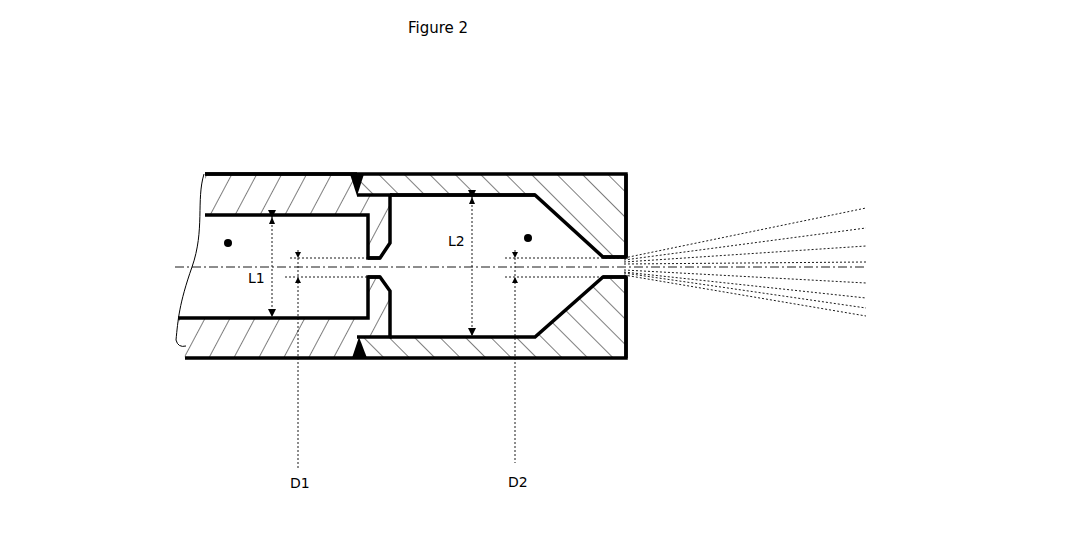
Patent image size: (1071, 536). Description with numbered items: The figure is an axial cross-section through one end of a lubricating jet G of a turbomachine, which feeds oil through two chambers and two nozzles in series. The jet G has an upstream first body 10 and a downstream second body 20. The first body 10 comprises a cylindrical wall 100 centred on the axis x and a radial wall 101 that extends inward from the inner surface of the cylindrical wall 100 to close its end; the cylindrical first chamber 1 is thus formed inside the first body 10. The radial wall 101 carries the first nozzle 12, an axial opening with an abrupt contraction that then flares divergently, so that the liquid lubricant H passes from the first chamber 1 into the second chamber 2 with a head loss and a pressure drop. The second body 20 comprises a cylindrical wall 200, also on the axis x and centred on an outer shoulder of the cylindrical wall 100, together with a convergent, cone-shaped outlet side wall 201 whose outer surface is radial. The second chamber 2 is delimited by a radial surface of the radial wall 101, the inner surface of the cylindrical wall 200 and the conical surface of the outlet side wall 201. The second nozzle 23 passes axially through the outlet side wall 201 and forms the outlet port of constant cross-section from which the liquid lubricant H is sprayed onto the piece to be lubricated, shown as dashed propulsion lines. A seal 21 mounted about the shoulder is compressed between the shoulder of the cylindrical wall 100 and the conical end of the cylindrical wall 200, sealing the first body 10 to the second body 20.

The first duct chamber 1 is at (228, 240).
The first body 10 is at (185, 360).
The cylindrical wall 100 is at (280, 190).
The radial wall 101 is at (402, 175).
The first nozzle 12 is at (395, 260).
The second duct chamber 2 is at (527, 236).
The second body 20 is at (592, 370).
The cylindrical wall 200 is at (455, 186).
The outlet side wall 201 is at (636, 190).
The seal 21 is at (357, 360).
The second nozzle 23 is at (628, 270).
The jet G is at (683, 103).
The liquid lubricant H is at (748, 291).
The axis x is at (180, 267).